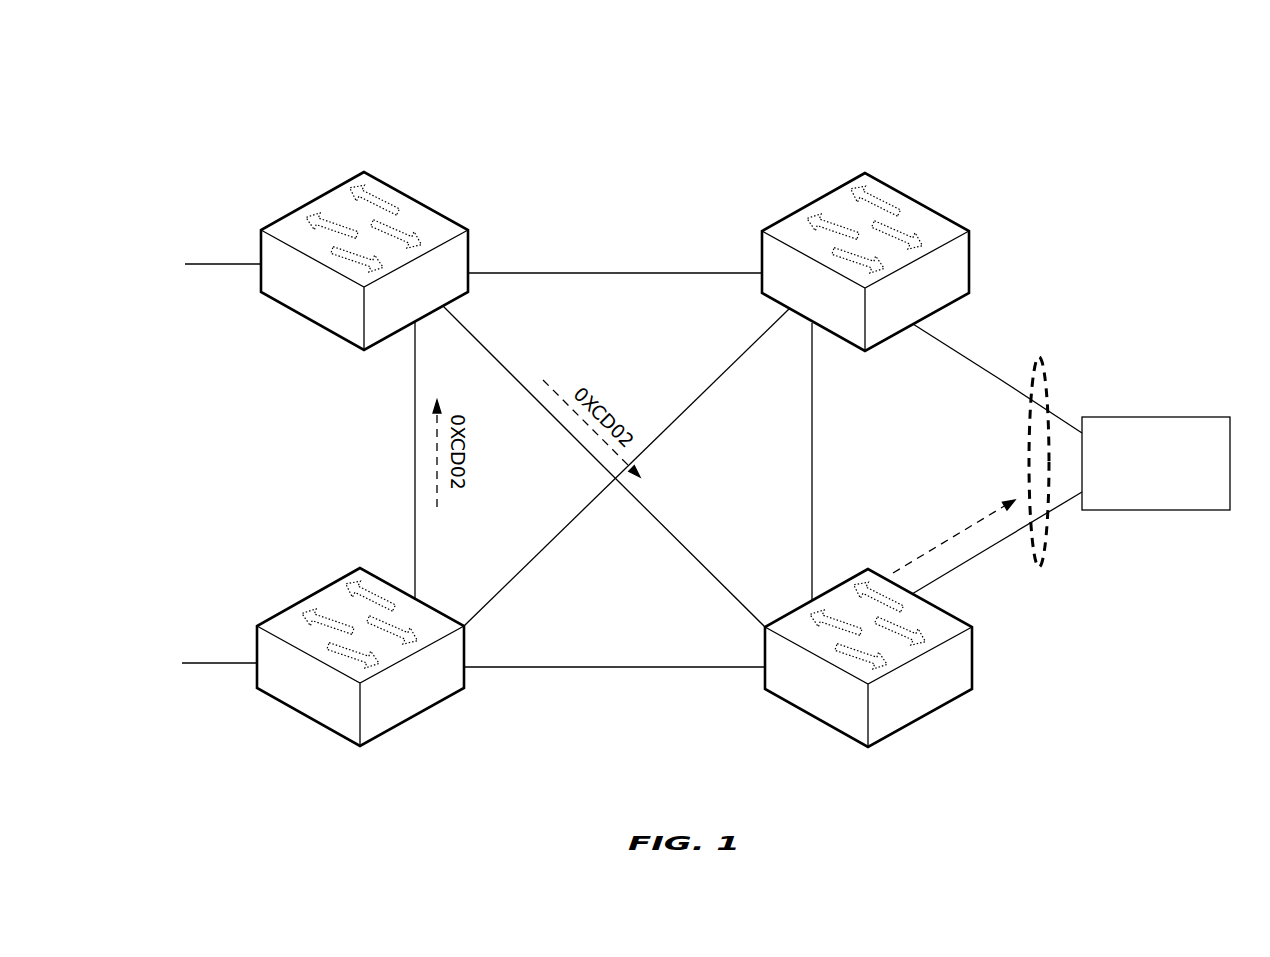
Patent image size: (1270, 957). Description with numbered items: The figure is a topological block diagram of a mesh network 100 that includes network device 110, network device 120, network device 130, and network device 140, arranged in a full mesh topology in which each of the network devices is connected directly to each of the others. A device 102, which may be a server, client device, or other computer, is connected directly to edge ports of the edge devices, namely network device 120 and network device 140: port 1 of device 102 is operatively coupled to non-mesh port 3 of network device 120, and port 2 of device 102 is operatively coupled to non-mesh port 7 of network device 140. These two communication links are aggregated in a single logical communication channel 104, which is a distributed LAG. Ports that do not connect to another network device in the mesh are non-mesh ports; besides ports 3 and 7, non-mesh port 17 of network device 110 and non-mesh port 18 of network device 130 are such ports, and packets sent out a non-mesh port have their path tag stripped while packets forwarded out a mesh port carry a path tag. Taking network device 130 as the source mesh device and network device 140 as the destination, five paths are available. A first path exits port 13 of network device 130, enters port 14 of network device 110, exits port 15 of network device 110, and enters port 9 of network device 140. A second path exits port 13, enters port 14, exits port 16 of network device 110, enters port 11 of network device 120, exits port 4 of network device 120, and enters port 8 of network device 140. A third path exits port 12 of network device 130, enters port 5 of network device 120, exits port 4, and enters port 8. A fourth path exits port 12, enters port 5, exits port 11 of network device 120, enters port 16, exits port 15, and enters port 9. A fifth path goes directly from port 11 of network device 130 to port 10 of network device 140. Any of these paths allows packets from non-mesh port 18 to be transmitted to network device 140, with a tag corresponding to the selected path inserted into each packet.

The mesh network 100 is at (1240, 120).
The device 102 is at (1138, 486).
The single logical communication channel 104 is at (1039, 357).
The network device 110 is at (402, 190).
The network device 120 is at (943, 212).
The network device 130 is at (323, 588).
The network device 140 is at (868, 747).
The port 1 is at (1040, 405).
The port 2 is at (1039, 517).
The non-mesh port 3 is at (954, 351).
The port 4 is at (826, 391).
The port 5 is at (708, 387).
The non-mesh port 7 is at (954, 576).
The port 8 is at (825, 530).
The port 9 is at (691, 547).
The port 10 is at (690, 685).
The port 11 is at (613, 474).
The port 12 is at (541, 546).
The port 13 is at (398, 530).
The port 14 is at (401, 391).
The port 15 is at (523, 386).
The port 16 is at (541, 259).
The non-mesh port 17 is at (223, 279).
The non-mesh port 18 is at (219, 678).